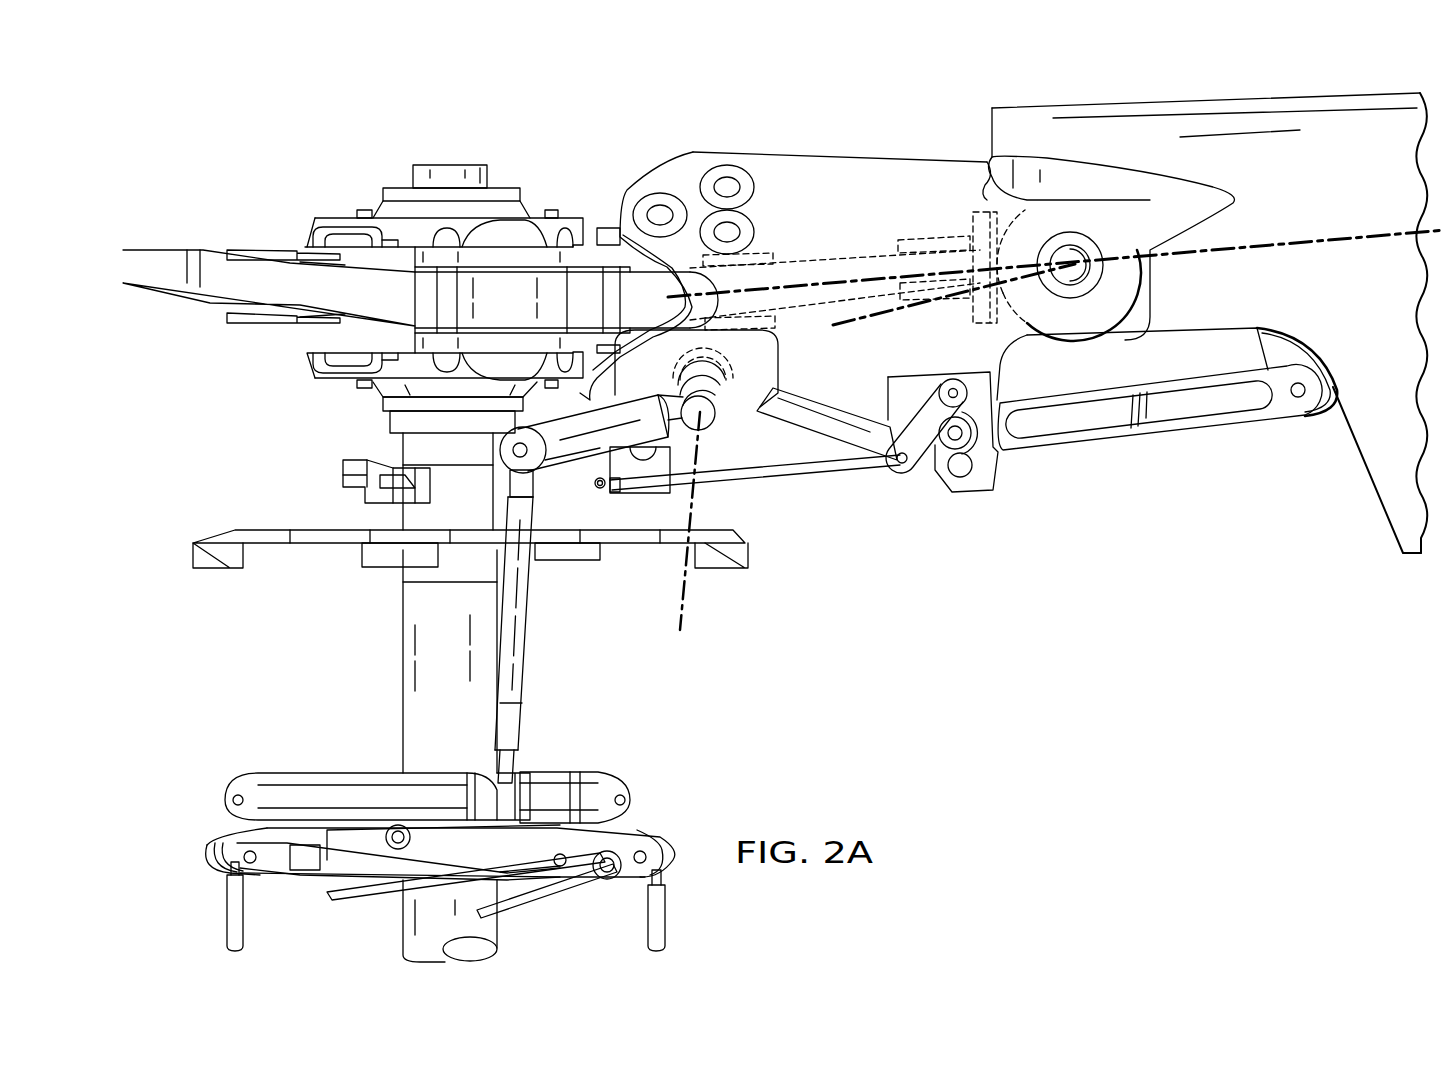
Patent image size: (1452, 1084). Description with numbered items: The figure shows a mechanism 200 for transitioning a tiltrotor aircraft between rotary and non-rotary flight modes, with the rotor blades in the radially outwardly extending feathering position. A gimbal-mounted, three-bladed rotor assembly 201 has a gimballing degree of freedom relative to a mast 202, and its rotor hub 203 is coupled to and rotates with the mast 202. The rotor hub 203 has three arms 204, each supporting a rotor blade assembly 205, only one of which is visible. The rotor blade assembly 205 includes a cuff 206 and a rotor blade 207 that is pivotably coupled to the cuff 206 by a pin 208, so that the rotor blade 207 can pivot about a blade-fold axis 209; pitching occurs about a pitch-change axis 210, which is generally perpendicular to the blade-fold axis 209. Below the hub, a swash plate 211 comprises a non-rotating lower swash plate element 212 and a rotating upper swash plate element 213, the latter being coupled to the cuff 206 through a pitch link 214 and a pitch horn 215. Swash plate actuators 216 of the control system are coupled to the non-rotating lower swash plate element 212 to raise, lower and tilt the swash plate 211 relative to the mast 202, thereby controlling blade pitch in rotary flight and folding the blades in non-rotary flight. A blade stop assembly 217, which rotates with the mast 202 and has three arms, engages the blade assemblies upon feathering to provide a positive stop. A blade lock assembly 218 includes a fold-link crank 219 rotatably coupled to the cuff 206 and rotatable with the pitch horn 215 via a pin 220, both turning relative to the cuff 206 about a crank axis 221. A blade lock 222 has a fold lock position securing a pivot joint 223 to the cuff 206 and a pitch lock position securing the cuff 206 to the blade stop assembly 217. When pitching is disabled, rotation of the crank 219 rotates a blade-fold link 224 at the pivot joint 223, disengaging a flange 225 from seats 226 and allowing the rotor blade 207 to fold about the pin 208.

The mechanism 200 is at (172, 143).
The rotor assembly 201 is at (398, 185).
The mast 202 is at (398, 922).
The rotor hub 203 is at (515, 285).
The arms 204 is at (216, 265).
The rotor blade assembly 205 is at (712, 150).
The cuff 206 is at (850, 165).
The rotor blade 207 is at (1310, 95).
The pin 208 is at (1092, 247).
The blade-fold axis 209 is at (848, 318).
The pitch-change axis 210 is at (1340, 243).
The swash plate 211 is at (652, 830).
The non-rotating lower swash plate element 212 is at (272, 860).
The rotating upper swash plate element 213 is at (268, 773).
The pitch link 214 is at (527, 690).
The pitch horn 215 is at (580, 470).
The swash plate actuators 216 is at (222, 918).
The blade stop assembly 217 is at (345, 462).
The blade lock assembly 218 is at (945, 510).
The fold-link crank 219 is at (830, 455).
The pin 220 is at (715, 400).
The crank axis 221 is at (683, 615).
The blade lock 222 is at (780, 481).
The pivot joint 223 is at (960, 432).
The blade-fold link 224 is at (1190, 415).
The flange 225 is at (962, 448).
The seats 226 is at (963, 380).